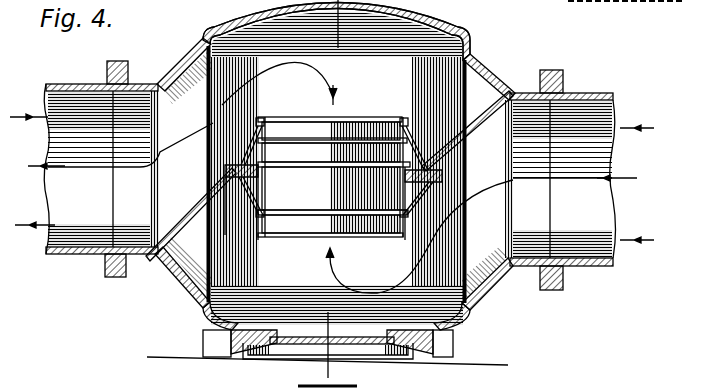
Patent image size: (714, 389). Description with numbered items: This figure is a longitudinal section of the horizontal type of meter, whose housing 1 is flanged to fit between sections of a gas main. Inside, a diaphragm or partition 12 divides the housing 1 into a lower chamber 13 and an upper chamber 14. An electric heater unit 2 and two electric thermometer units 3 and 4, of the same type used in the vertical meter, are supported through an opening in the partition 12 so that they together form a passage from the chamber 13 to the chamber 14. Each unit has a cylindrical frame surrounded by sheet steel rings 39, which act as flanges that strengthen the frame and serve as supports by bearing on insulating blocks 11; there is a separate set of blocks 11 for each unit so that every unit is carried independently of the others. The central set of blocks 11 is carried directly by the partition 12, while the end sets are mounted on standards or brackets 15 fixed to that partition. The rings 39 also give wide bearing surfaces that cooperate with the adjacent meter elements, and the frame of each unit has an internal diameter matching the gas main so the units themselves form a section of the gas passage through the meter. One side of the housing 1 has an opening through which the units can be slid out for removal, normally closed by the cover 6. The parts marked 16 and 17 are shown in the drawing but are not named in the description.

The vessel shell / casing 1 is at (428, 18).
The inlet-outlet conduit and baffle / middle catalyst chamber 2 is at (200, 194).
The upper catalyst chamber 3 is at (332, 139).
The lower catalyst chamber 4 is at (332, 177).
The bottom outlet cup 6 is at (334, 372).
The hanger struts 11 is at (256, 120).
The inclined baffle plate 12 is at (462, 160).
The lower gas flow path 13 is at (379, 266).
The upper gas flow path 14 is at (279, 79).
The chamber side frames 15 is at (262, 240).
The plate end support 16 is at (219, 208).
The curved guide plate 17 is at (466, 219).
The partition plate 39 is at (313, 122).